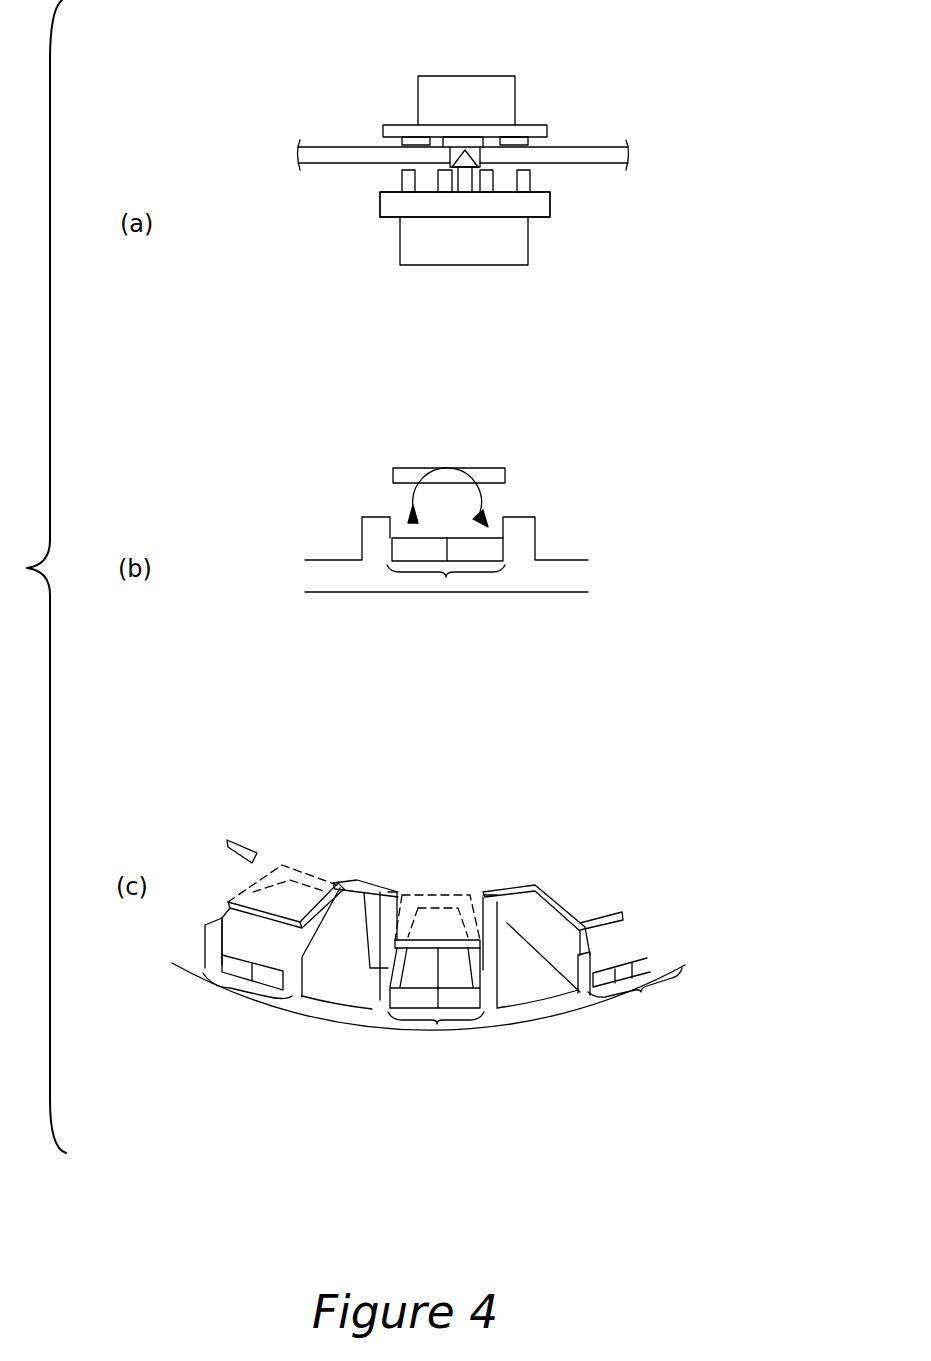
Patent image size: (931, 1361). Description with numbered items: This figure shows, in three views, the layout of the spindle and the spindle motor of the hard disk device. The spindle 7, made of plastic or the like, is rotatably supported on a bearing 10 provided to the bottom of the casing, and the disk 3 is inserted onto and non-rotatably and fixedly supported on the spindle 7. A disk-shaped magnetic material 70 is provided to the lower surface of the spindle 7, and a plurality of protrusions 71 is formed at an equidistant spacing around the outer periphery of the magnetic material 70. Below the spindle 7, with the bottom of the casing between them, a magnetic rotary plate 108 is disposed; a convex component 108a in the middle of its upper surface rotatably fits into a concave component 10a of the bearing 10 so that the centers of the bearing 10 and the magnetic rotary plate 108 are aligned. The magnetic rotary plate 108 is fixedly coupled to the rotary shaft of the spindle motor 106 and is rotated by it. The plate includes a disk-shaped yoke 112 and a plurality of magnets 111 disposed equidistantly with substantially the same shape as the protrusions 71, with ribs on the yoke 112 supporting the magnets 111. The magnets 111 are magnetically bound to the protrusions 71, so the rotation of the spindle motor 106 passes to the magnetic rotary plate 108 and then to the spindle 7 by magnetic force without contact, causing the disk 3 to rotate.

The disk 3 is at (348, 147).
The spindle 7 is at (497, 77).
The bearing 10 is at (490, 143).
The concave component 10a is at (483, 153).
The magnetic material 70 is at (403, 128).
The protrusions 71 is at (533, 143).
The spindle motor 106 is at (530, 247).
The magnetic rotary plate 108 is at (557, 207).
The convex component 108a is at (450, 163).
The magnets 111 is at (410, 193).
The yoke 112 is at (387, 202).